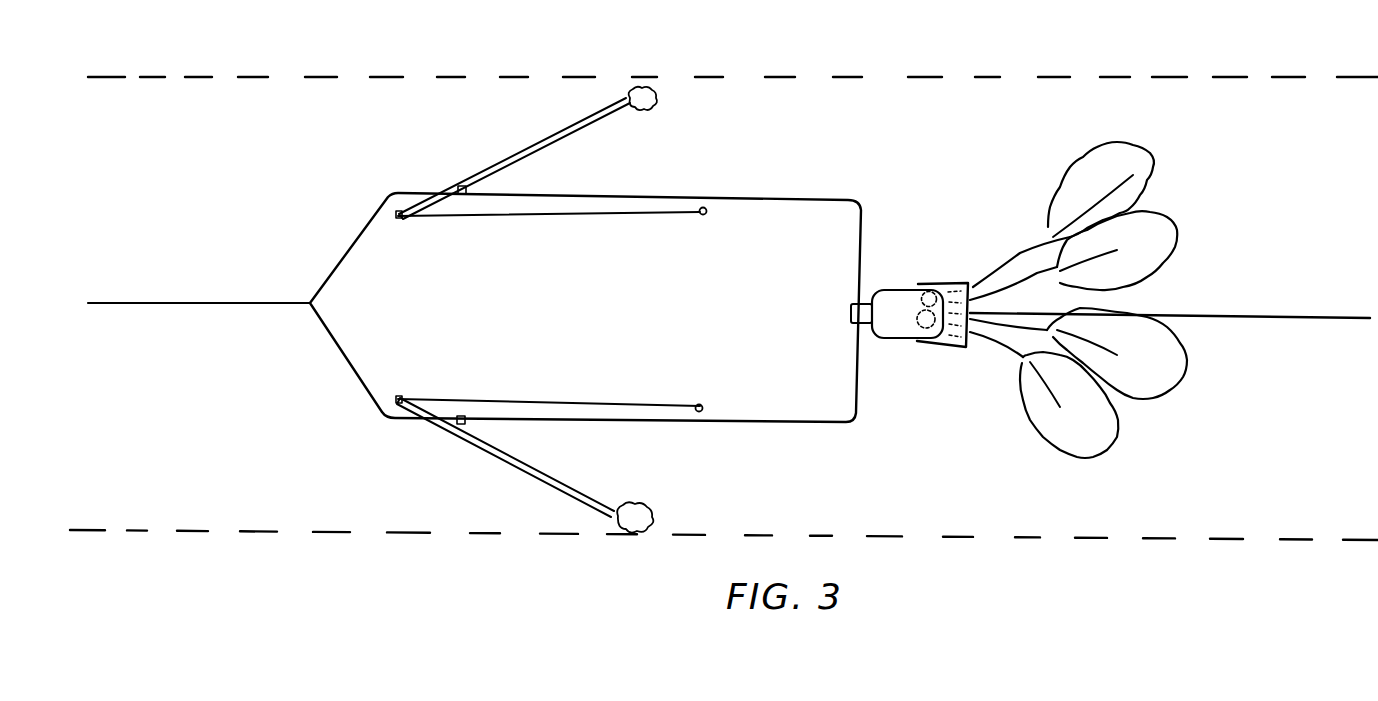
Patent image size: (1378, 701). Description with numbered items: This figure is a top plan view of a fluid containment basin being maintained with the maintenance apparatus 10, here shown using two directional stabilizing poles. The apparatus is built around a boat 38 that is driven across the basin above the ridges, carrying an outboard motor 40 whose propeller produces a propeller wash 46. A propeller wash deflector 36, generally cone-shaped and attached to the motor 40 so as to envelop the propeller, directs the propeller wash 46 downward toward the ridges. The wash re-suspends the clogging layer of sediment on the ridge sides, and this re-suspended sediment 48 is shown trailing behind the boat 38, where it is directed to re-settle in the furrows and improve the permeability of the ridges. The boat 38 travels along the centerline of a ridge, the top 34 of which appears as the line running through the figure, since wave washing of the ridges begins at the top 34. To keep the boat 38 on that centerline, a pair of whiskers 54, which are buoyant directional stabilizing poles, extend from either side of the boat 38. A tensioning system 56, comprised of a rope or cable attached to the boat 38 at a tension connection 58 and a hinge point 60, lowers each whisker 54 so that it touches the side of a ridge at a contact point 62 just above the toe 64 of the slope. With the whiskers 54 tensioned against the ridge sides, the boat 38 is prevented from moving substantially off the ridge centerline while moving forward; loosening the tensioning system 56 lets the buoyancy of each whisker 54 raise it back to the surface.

The maintenance apparatus 10 is at (891, 268).
The top of ridges 34 is at (1242, 302).
The propeller wash deflector 36 is at (935, 283).
The boat 38 is at (801, 196).
The outboard motor 40 is at (885, 340).
The propeller wash 46 is at (1020, 246).
The re-suspended sediment 48 is at (650, 95).
The directional stabilizing pole 54 is at (518, 153).
The tensioning system 56 is at (583, 213).
The tension connection 58 is at (716, 206).
The hinge point 60 is at (467, 192).
The contact point 62 is at (603, 518).
The toe of the slope 64 is at (814, 532).